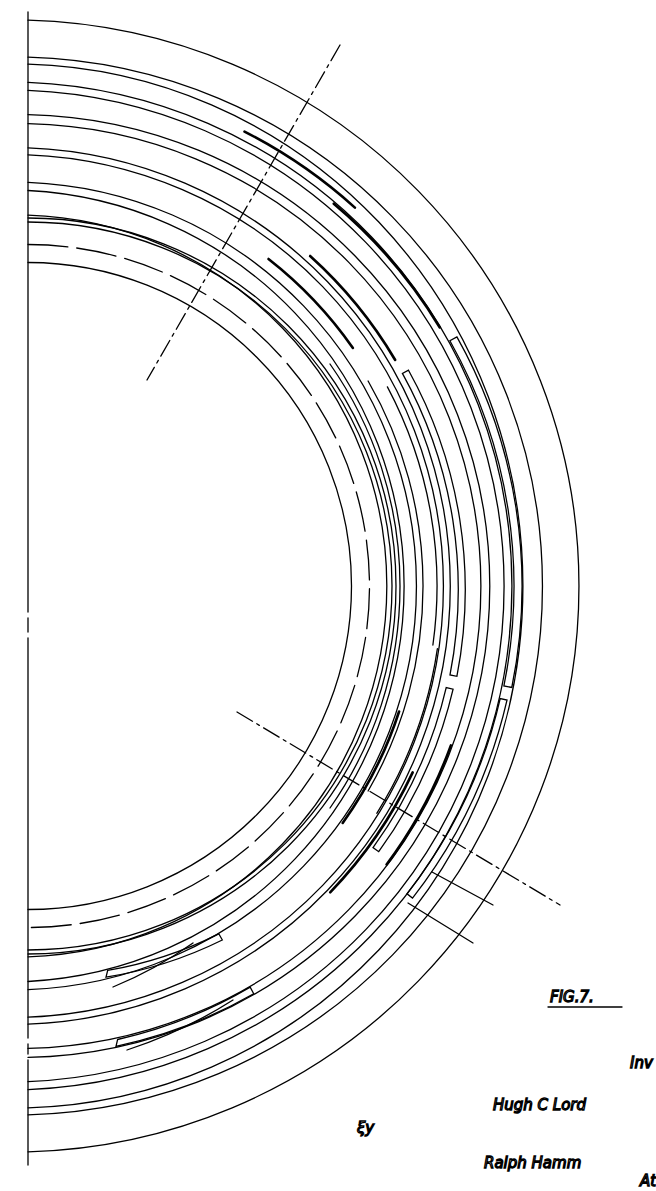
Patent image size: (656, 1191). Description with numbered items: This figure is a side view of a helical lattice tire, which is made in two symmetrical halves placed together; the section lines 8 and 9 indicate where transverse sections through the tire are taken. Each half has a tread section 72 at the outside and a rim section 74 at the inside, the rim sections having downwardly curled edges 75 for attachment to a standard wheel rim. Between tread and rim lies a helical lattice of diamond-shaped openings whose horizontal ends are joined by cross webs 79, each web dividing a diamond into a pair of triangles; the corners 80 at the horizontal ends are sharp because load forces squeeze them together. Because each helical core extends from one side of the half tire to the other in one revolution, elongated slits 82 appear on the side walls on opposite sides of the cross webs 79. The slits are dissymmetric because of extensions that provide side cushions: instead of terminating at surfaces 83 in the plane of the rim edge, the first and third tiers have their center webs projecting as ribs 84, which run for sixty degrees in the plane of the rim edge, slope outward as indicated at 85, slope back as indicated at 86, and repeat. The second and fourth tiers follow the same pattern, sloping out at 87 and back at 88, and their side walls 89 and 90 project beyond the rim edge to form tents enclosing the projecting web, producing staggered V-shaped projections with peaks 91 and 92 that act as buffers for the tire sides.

The tread section 72 is at (437, 197).
The rim section 74 is at (341, 497).
The downwardly curled edges 75 is at (348, 533).
The cross webs 79 is at (443, 388).
The corners 80 is at (395, 856).
The elongated slits 82 is at (487, 477).
The surfaces 83 is at (410, 255).
The ribs 84 is at (417, 760).
The outward slope 85 is at (445, 687).
The return slope 86 is at (461, 917).
The outward slope 87 is at (185, 142).
The return slope 88 is at (350, 348).
The side wall 89 is at (228, 178).
The side wall 90 is at (222, 148).
The peak 91 is at (390, 805).
The peak 92 is at (240, 240).
The section line 8— 8 is at (337, 50).
The section line 9— 9 is at (258, 737).